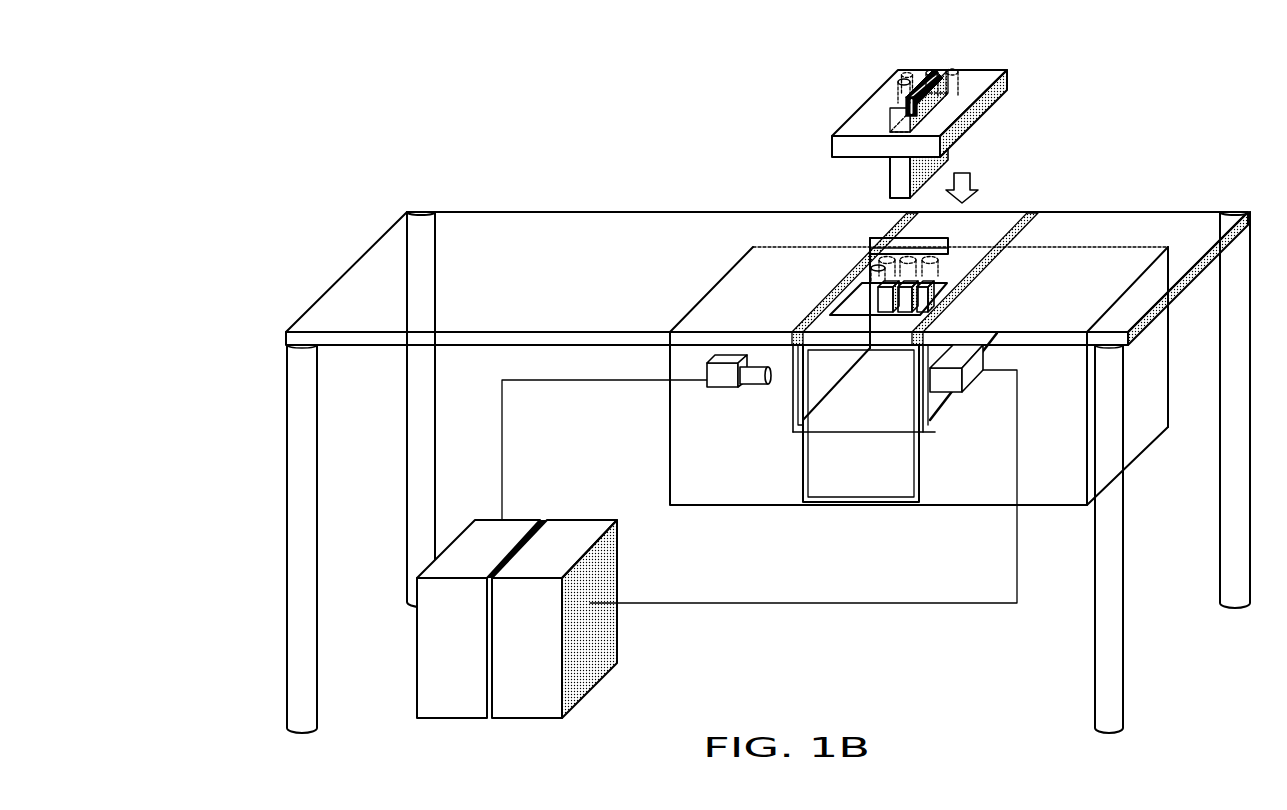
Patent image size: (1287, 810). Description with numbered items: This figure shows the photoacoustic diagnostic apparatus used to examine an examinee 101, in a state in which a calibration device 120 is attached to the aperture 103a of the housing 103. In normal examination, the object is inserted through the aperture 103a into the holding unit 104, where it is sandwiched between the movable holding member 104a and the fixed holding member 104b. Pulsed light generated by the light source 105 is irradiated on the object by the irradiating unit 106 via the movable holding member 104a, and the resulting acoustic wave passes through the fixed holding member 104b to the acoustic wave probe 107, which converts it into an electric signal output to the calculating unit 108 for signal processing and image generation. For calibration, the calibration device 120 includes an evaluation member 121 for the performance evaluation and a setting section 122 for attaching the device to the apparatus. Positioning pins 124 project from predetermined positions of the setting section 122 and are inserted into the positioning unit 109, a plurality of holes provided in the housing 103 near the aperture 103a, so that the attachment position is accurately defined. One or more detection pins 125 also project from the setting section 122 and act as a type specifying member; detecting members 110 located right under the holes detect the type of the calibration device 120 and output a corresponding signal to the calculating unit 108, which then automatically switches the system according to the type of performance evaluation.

The examinee 101 is at (478, 215).
The housing 103 is at (960, 505).
The aperture 103a is at (852, 314).
The holding unit 104 is at (865, 433).
The movable holding member 104a is at (795, 418).
The fixed holding member 104b is at (935, 418).
The light source 105 is at (500, 537).
The irradiating unit 106 is at (711, 392).
The acoustic wave probe 107 is at (968, 391).
The calculating unit 108 is at (567, 528).
The positioning unit 109 is at (937, 222).
The detecting members 110 is at (927, 296).
The calibration device 120 is at (897, 109).
The evaluation member 121 is at (889, 165).
The setting section 122 is at (988, 100).
The positioning pins 124 is at (905, 90).
The detection pins 125 is at (900, 64).